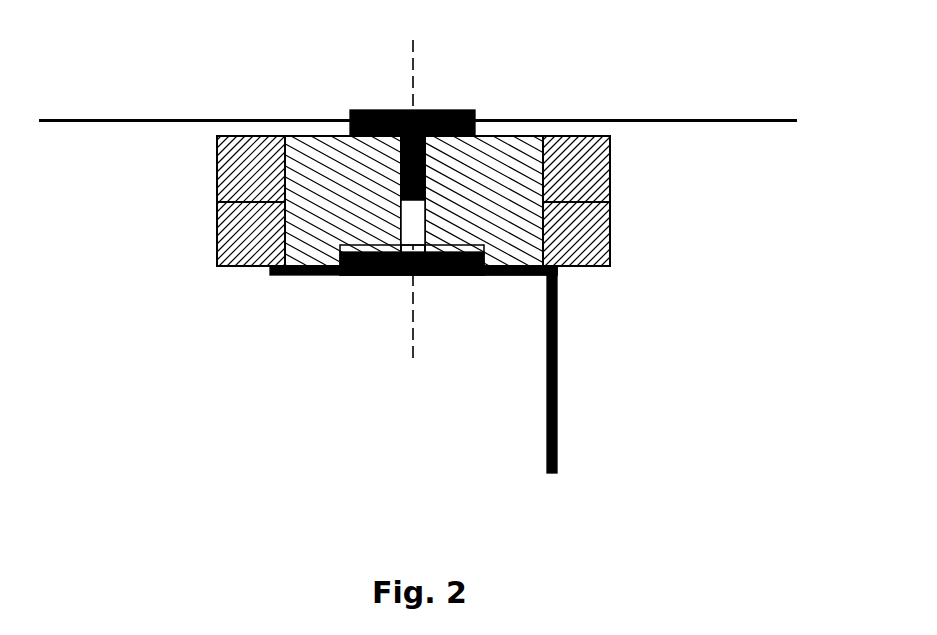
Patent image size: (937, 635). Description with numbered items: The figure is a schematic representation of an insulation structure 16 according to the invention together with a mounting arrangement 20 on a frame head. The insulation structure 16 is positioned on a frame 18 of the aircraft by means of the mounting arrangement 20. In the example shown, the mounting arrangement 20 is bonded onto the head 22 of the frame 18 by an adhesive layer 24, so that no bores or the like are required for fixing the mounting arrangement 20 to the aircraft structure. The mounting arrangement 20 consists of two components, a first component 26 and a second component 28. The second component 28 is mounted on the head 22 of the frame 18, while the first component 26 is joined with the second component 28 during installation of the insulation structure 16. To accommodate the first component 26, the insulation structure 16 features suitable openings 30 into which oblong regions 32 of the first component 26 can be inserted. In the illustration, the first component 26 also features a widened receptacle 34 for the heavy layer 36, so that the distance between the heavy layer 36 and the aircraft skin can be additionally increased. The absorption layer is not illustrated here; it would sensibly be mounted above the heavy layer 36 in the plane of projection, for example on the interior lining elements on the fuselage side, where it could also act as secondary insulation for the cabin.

The insulation structure 16 is at (634, 194).
The frame 18 is at (557, 375).
The mounting arrangement 20 is at (426, 157).
The head 22 is at (515, 284).
The adhesive layer 24 is at (358, 276).
The first component 26 is at (479, 196).
The second component 28 is at (460, 276).
The openings 30 is at (386, 167).
The oblong regions 32 is at (400, 192).
The widened receptacle 34 is at (375, 108).
The heavy layer 36 is at (781, 116).